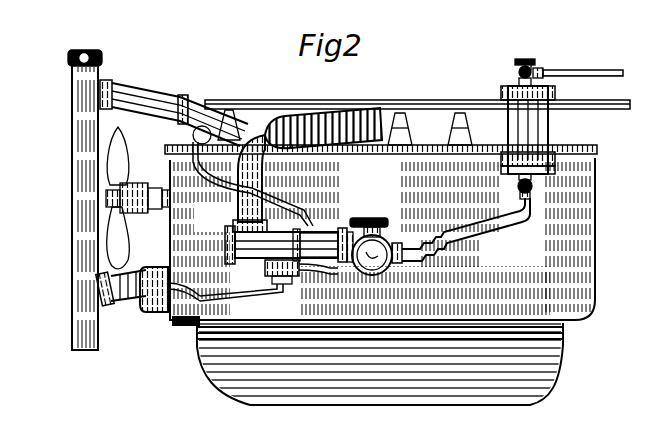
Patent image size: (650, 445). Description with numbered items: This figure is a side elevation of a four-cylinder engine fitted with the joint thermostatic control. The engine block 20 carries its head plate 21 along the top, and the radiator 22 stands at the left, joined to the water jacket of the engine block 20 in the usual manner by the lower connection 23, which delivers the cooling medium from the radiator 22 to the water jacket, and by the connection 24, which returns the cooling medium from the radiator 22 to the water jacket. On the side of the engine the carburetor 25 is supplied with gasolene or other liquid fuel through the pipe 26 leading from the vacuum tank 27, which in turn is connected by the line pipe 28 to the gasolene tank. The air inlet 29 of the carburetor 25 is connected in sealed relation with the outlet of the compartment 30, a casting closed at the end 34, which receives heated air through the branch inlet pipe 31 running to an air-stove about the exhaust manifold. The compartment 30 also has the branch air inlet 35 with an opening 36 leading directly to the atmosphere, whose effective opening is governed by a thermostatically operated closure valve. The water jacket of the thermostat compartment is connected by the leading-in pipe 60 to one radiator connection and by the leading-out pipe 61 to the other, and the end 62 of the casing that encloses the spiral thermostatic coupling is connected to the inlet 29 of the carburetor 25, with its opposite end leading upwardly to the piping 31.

The engine block 20 is at (578, 240).
The head plate 21 is at (573, 146).
The radiator 22 is at (82, 202).
The lower connection 23 is at (118, 285).
The connection 24 is at (123, 98).
The carburetor 25 is at (388, 233).
The pipe 26 is at (480, 222).
The vacuum tank 27 is at (540, 124).
The line pipe 28 is at (562, 69).
The air inlet 29 is at (350, 263).
The compartment 30 is at (322, 232).
The branch inlet pipe 31 is at (310, 110).
The end 34 is at (226, 247).
The branch air inlet 35 is at (265, 271).
The opening 36 is at (278, 292).
The leading-in pipe 60 is at (187, 163).
The leading-out pipe 61 is at (178, 312).
The end 62 is at (340, 267).